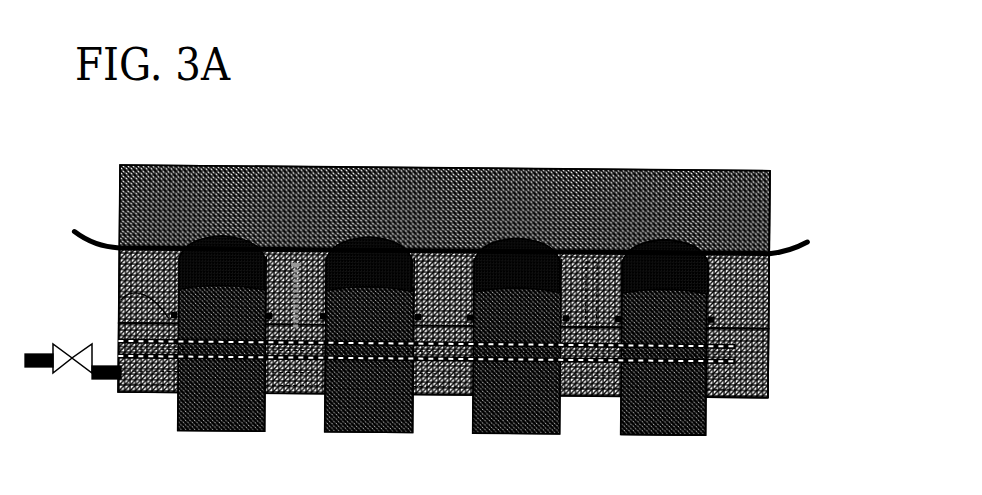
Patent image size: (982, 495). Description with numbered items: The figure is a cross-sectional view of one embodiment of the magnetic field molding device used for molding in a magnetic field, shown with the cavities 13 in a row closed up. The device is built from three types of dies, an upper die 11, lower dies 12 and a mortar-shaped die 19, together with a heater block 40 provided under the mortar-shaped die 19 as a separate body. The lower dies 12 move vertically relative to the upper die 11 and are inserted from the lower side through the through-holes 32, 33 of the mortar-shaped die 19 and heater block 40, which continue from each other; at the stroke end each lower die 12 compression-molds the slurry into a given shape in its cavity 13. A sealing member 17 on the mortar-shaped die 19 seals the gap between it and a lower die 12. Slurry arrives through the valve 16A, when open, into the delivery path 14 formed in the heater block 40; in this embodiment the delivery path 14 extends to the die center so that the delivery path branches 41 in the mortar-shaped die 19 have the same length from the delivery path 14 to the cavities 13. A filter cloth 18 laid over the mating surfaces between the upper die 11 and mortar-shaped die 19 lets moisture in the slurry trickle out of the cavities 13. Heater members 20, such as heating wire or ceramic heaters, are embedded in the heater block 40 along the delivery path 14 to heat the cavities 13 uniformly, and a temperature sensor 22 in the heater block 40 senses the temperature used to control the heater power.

The upper die 11 is at (607, 168).
The lower die 12 is at (270, 402).
The cavity 13 is at (168, 222).
The delivery path 14 is at (163, 393).
The valve 16A is at (52, 375).
The sealing member 17 is at (120, 307).
The filter cloth 18 is at (83, 246).
The mortar-shaped die 19 is at (770, 290).
The heater member 20 is at (673, 415).
The temperature sensor 22 is at (215, 236).
The through-hole 32 is at (735, 272).
The through-hole 33 is at (745, 383).
The heater block 40 is at (770, 368).
The delivery path branch 41 is at (318, 250).